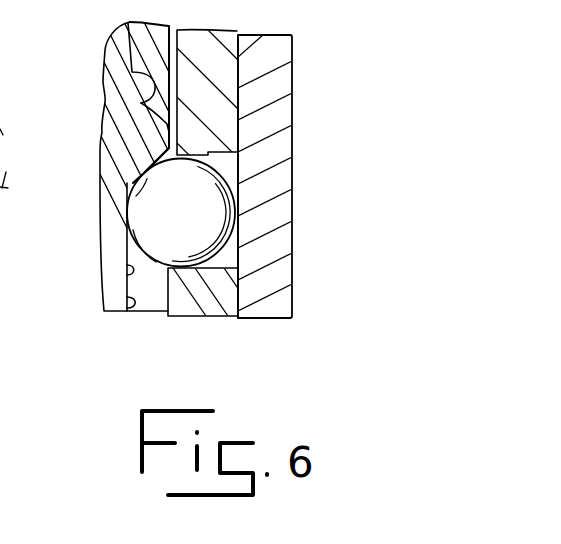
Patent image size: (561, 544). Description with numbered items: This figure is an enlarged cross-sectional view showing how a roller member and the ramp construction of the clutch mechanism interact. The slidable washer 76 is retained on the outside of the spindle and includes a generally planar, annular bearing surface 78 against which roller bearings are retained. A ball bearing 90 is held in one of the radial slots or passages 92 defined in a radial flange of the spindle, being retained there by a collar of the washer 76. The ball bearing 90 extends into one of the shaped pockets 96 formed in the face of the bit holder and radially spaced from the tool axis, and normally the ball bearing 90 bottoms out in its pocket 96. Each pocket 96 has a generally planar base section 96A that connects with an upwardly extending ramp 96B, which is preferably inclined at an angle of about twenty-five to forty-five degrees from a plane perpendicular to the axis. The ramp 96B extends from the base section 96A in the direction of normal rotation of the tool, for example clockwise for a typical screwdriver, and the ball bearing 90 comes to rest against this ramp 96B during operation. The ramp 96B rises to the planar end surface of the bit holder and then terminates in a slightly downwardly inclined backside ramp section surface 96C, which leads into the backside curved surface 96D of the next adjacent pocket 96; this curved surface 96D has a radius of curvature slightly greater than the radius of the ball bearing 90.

The slidable washer 76 is at (270, 310).
The annular bearing surface 78 is at (243, 84).
The ball bearings 90 is at (190, 253).
The radial slots or passages 92 is at (220, 272).
The shaped pockets 96 is at (136, 312).
The planar base section 96A is at (128, 276).
The ramp 96B is at (132, 172).
The backside ramp section surface 96C is at (168, 128).
The curved surface 96D is at (142, 78).